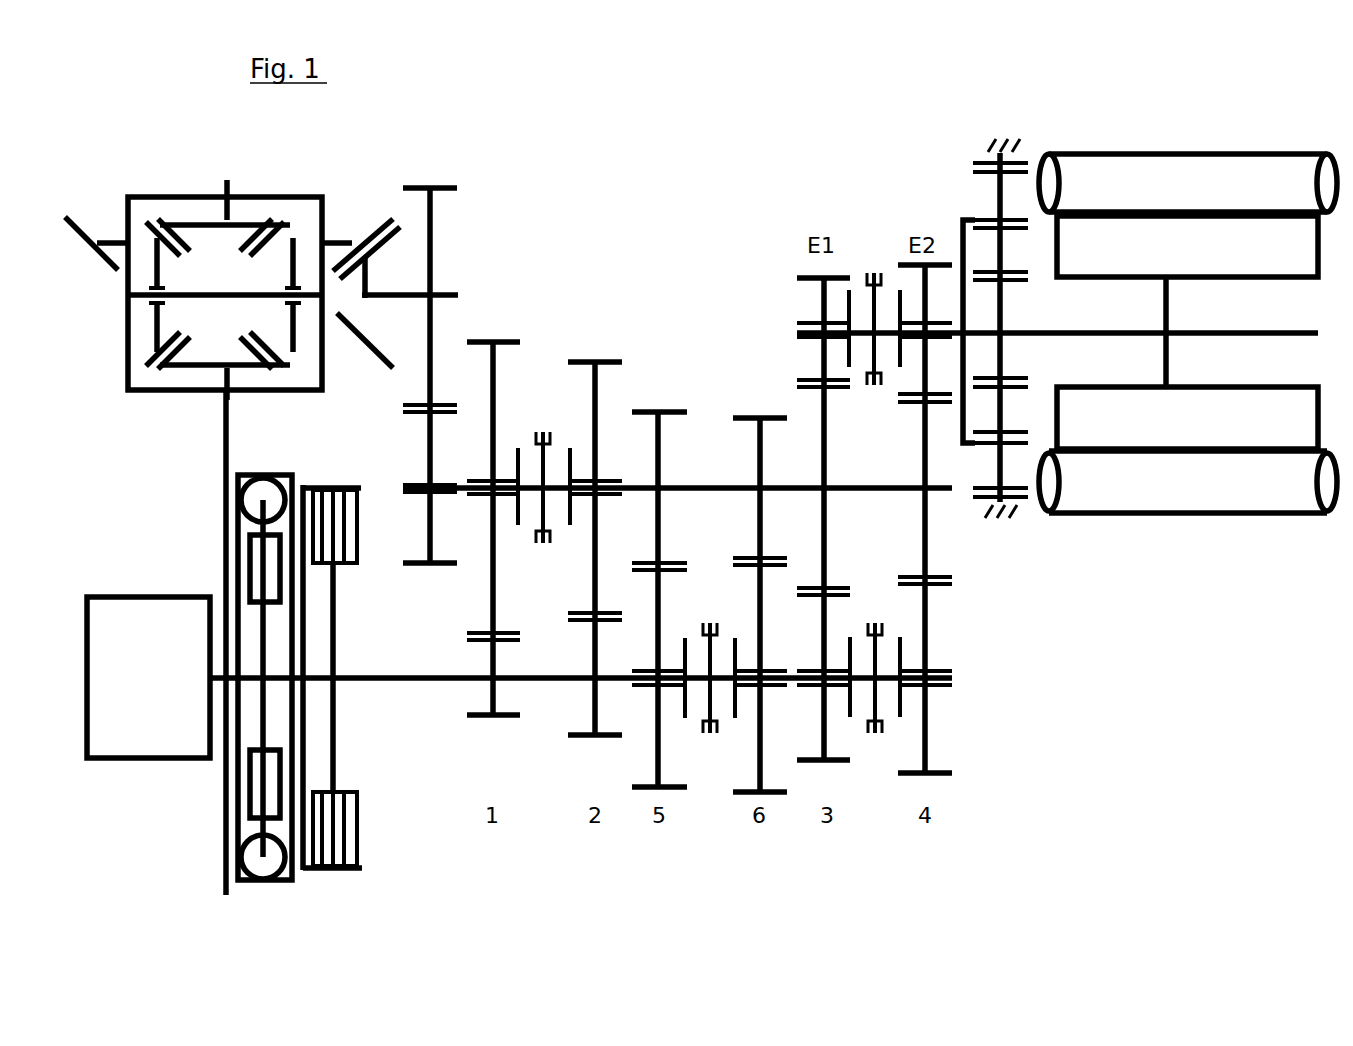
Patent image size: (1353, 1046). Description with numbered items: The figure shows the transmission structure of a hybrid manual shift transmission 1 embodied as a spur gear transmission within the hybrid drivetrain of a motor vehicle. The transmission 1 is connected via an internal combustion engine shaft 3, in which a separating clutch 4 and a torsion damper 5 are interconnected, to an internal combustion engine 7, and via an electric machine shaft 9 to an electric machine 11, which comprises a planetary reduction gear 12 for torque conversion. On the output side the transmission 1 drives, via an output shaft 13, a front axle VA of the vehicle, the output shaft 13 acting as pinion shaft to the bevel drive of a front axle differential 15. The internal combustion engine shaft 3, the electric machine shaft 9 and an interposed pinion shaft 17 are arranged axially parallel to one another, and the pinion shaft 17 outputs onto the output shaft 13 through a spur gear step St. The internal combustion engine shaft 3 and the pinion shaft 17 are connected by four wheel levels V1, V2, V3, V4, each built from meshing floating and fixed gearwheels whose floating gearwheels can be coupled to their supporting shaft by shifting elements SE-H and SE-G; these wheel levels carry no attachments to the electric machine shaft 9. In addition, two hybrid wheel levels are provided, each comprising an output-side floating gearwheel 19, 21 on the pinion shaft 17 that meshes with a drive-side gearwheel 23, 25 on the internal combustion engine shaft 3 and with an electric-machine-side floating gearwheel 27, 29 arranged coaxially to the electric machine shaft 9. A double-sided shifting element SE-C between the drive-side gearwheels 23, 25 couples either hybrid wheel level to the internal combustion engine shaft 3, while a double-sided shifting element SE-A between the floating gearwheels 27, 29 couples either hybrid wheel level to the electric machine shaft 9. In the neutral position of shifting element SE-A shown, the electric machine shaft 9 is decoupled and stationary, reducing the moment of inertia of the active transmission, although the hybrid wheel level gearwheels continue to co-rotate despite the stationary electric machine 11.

The manual shift transmission 1 is at (676, 266).
The internal combustion engine shaft 3 is at (405, 683).
The separating clutch 4 is at (335, 872).
The torsion damper 5 is at (262, 885).
The internal combustion engine 7 is at (151, 697).
The electric machine shaft 9 is at (955, 338).
The electric machine 11 is at (1186, 152).
The planetary reduction gear 12 is at (982, 162).
The output shaft 13 is at (444, 295).
The front axle differential 15 is at (183, 197).
The pinion shaft 17 is at (412, 484).
The output-side gearwheel 19 is at (827, 438).
The output-side gearwheel 21 is at (927, 535).
The drive-side gearwheel 23 is at (840, 763).
The drive-side gearwheel 25 is at (940, 775).
The floating gearwheel 27 is at (800, 277).
The floating gearwheel 29 is at (945, 263).
The spur gear step St is at (430, 356).
The front axle VA is at (226, 450).
The wheel level V1 is at (493, 504).
The wheel level V2 is at (595, 525).
The wheel level V3 is at (659, 576).
The wheel level V4 is at (760, 583).
The shifting element SE-H is at (538, 466).
The shifting element SE-G is at (703, 659).
The shifting element SE-A is at (877, 272).
The shifting element SE-C is at (882, 725).